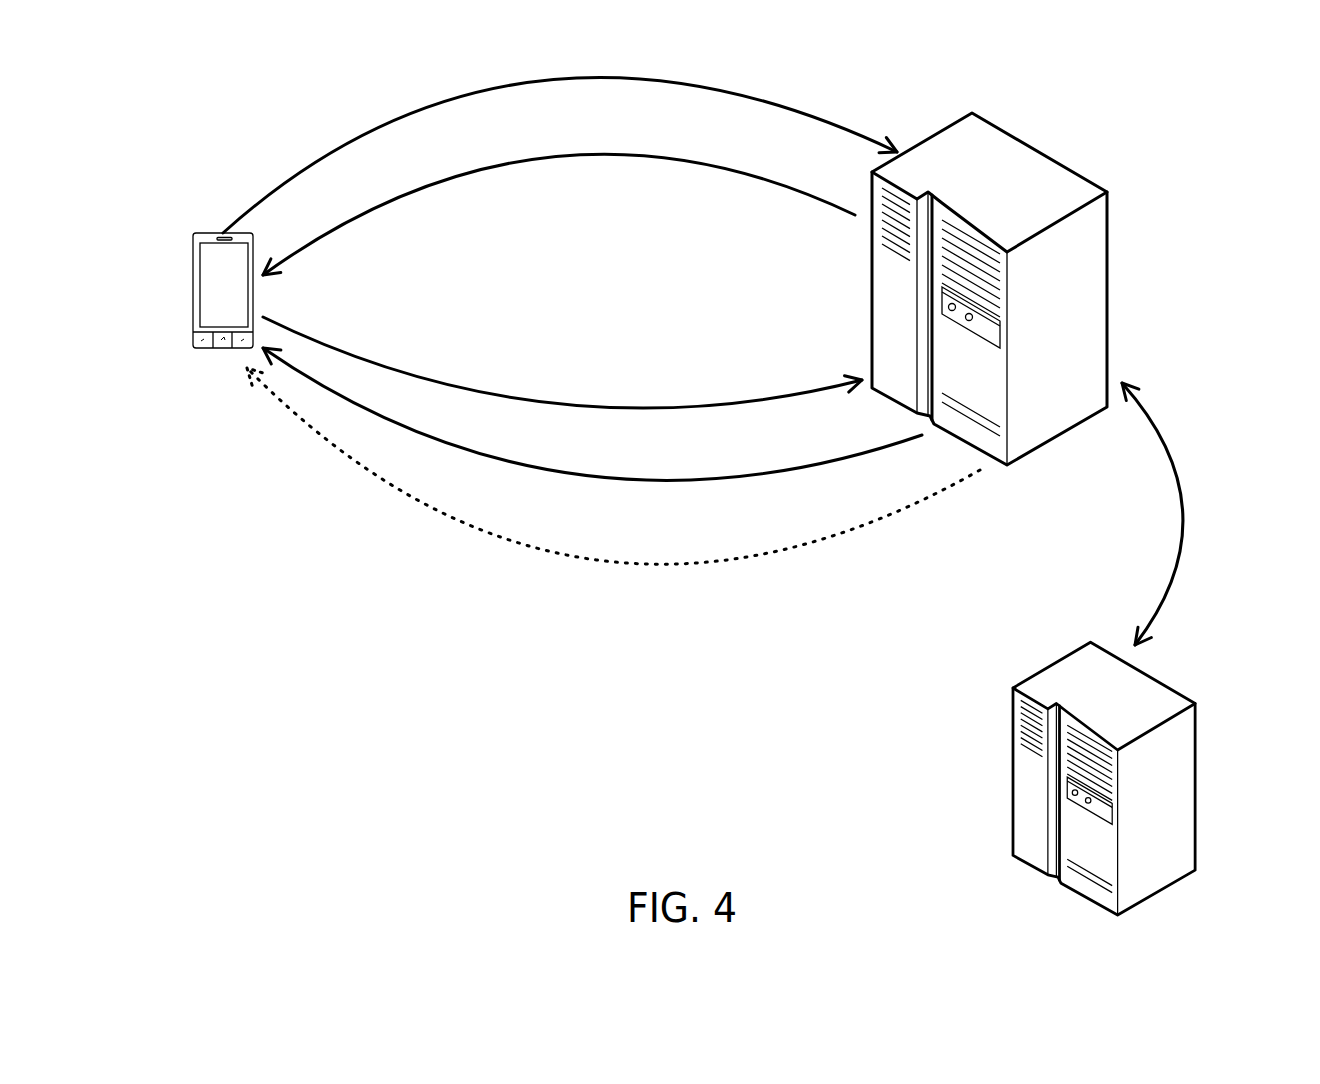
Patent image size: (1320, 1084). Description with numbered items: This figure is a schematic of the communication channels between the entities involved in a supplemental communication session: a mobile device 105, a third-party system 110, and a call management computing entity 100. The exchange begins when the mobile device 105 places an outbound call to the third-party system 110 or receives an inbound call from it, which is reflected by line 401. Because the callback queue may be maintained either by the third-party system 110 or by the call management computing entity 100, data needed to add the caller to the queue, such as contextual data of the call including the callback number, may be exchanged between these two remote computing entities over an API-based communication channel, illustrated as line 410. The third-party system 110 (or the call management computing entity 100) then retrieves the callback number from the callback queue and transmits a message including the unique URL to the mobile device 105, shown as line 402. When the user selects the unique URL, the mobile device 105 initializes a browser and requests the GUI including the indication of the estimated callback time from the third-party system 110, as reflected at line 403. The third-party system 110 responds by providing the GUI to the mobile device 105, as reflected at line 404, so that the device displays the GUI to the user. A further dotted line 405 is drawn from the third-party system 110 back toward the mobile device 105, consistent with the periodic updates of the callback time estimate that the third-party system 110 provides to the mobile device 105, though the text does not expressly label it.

The call management computing entity 100 is at (1202, 780).
The mobile device 105 is at (218, 351).
The third-party system 110 is at (1118, 292).
The line 401 is at (353, 131).
The line 402 is at (835, 185).
The line 403 is at (373, 341).
The line 404 is at (890, 438).
The optional message 405 is at (938, 490).
The line 410 is at (1246, 530).